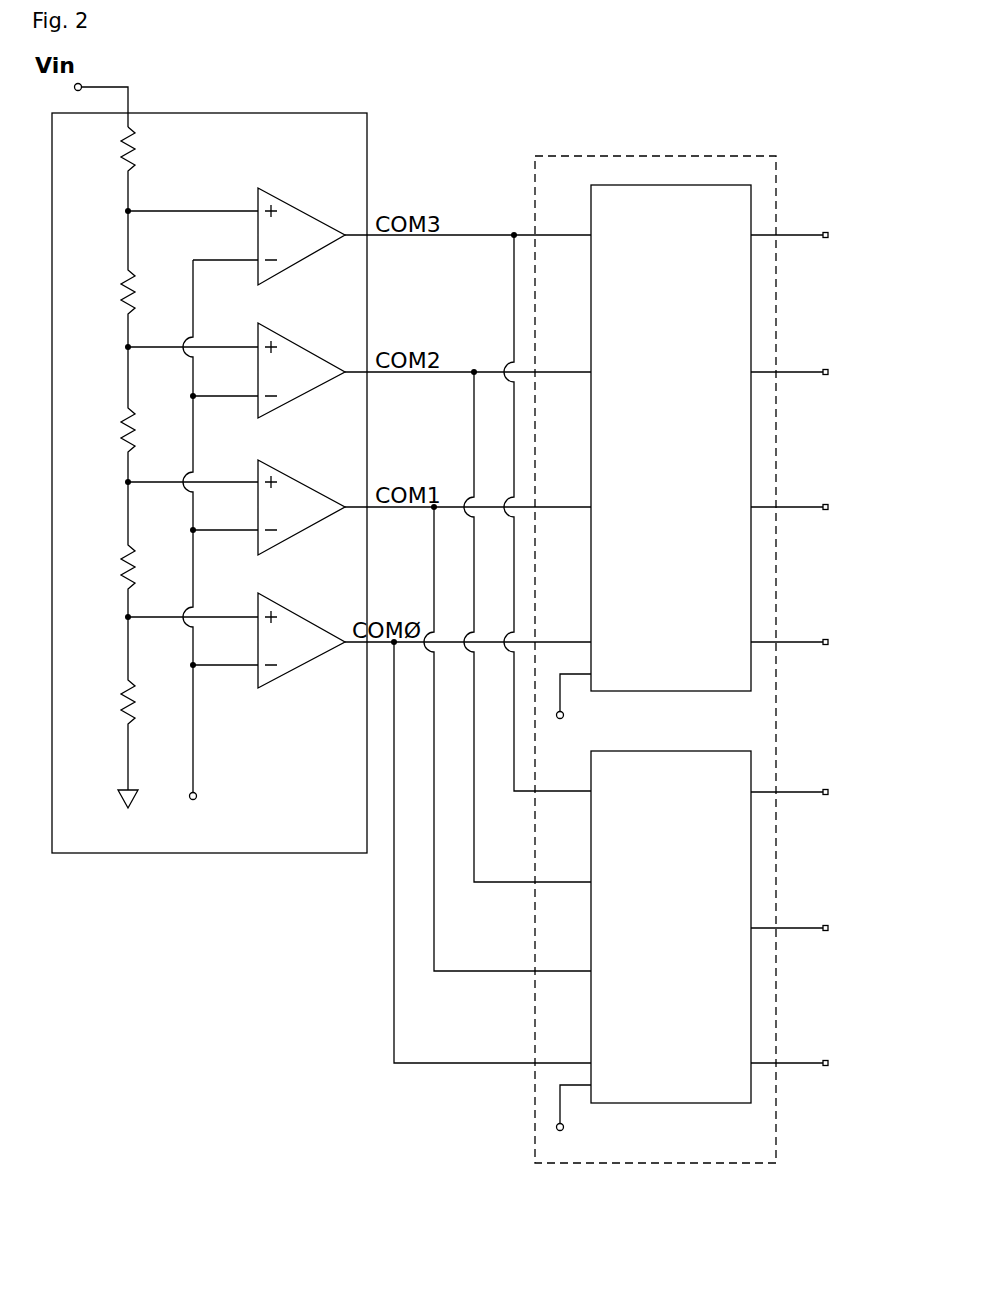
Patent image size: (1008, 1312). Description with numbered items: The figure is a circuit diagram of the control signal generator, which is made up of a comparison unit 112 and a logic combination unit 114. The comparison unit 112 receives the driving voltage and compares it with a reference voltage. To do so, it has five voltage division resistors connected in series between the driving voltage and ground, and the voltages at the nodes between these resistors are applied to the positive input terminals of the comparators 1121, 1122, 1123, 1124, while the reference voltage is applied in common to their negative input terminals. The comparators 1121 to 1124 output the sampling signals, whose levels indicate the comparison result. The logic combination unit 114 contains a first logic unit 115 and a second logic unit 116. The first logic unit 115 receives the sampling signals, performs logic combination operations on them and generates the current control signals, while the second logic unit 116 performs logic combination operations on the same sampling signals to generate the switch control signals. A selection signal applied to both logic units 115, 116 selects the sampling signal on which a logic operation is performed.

The comparison unit 112 is at (209, 451).
The logic combination unit 114 is at (666, 156).
The first logic unit 115 is at (752, 190).
The second logic unit 116 is at (752, 757).
The comparator 1121 is at (303, 615).
The comparator 1122 is at (303, 480).
The comparator 1123 is at (303, 342).
The comparator 1124 is at (303, 207).